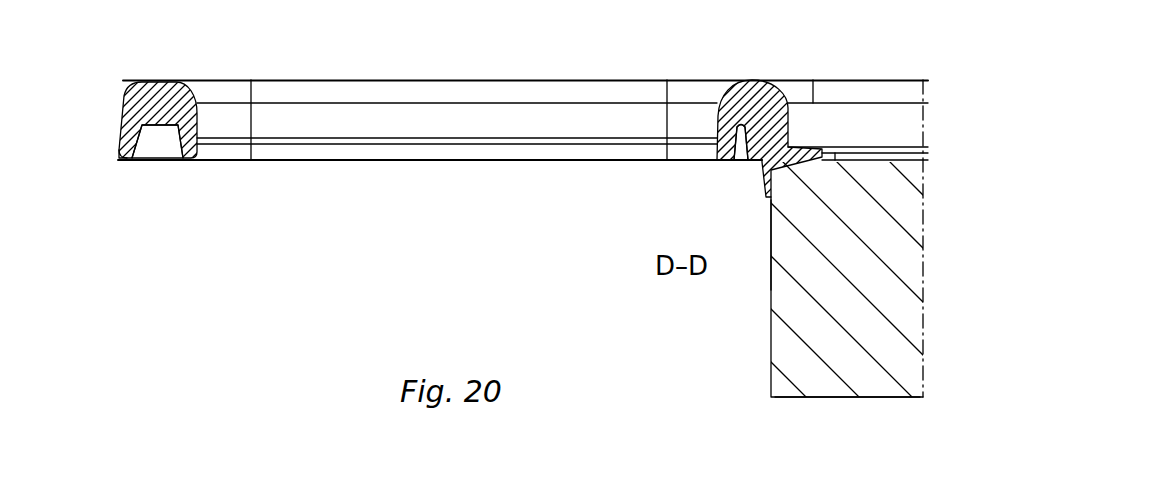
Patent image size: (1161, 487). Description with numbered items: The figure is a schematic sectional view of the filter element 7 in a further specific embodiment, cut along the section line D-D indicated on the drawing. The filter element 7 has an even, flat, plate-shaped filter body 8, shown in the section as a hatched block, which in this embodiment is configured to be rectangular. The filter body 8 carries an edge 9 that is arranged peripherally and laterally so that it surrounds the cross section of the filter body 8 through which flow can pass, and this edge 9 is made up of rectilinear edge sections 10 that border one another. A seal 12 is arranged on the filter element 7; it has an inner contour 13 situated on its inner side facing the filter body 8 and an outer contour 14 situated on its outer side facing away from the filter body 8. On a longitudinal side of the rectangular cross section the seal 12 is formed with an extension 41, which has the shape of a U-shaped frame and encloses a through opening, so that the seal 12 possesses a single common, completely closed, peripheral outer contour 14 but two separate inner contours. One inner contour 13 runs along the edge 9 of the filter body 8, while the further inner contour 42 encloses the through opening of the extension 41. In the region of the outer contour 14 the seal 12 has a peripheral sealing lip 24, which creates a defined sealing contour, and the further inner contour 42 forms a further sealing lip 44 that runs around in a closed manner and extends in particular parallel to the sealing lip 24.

The filter element 7 is at (428, 268).
The filter body 8 is at (829, 397).
The edge 9 is at (770, 308).
The rectilinear edge section 10 is at (770, 244).
The seal 12 is at (495, 78).
The inner contour 13 is at (795, 117).
The outer contour 14 is at (120, 122).
The sealing lip 24 is at (117, 145).
The extension 41 is at (355, 125).
The further inner contour 42 is at (201, 121).
The further sealing lip 44 is at (200, 146).